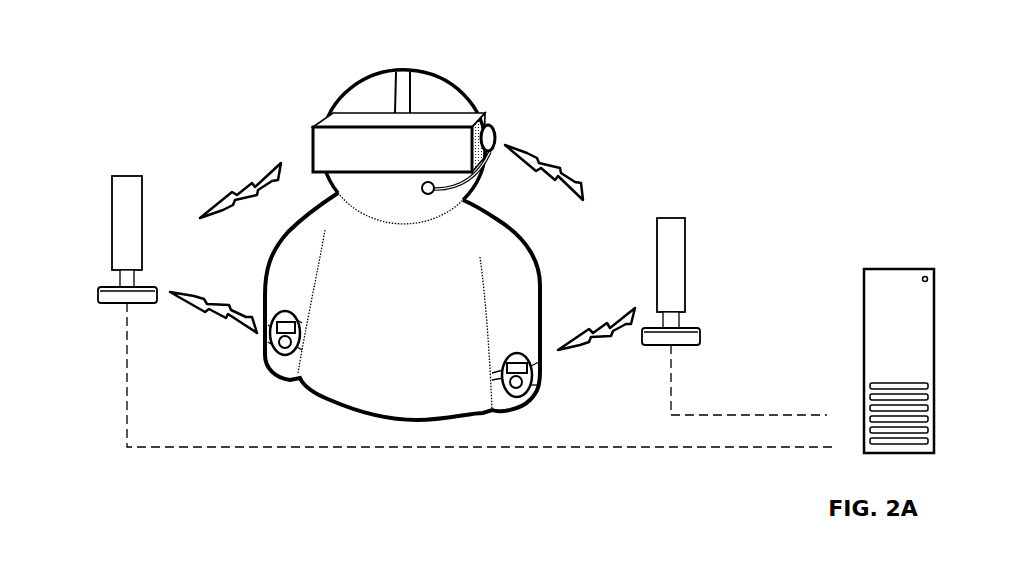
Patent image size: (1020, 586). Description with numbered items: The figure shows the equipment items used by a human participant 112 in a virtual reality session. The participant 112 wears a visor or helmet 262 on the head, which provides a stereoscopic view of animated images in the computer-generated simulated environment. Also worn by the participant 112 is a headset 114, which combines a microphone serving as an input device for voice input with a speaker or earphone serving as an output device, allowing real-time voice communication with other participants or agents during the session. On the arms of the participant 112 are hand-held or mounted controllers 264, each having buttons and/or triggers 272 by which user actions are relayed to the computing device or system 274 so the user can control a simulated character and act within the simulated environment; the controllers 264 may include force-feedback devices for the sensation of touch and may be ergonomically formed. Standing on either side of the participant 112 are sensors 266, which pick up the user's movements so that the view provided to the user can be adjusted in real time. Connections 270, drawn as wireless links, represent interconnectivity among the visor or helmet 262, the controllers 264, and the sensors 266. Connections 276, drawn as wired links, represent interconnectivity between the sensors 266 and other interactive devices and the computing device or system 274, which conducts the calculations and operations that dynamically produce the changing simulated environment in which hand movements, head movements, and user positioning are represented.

The participant 112 is at (432, 85).
The headset 114 is at (490, 133).
The visor or helmet 262 is at (333, 118).
The hand-held or mounted controllers 264 is at (267, 355).
The sensors 266 is at (127, 173).
The connections 270 is at (247, 187).
The buttons and/or triggers 272 is at (273, 345).
The computing device or system 274 is at (887, 268).
The connections 276 is at (732, 413).